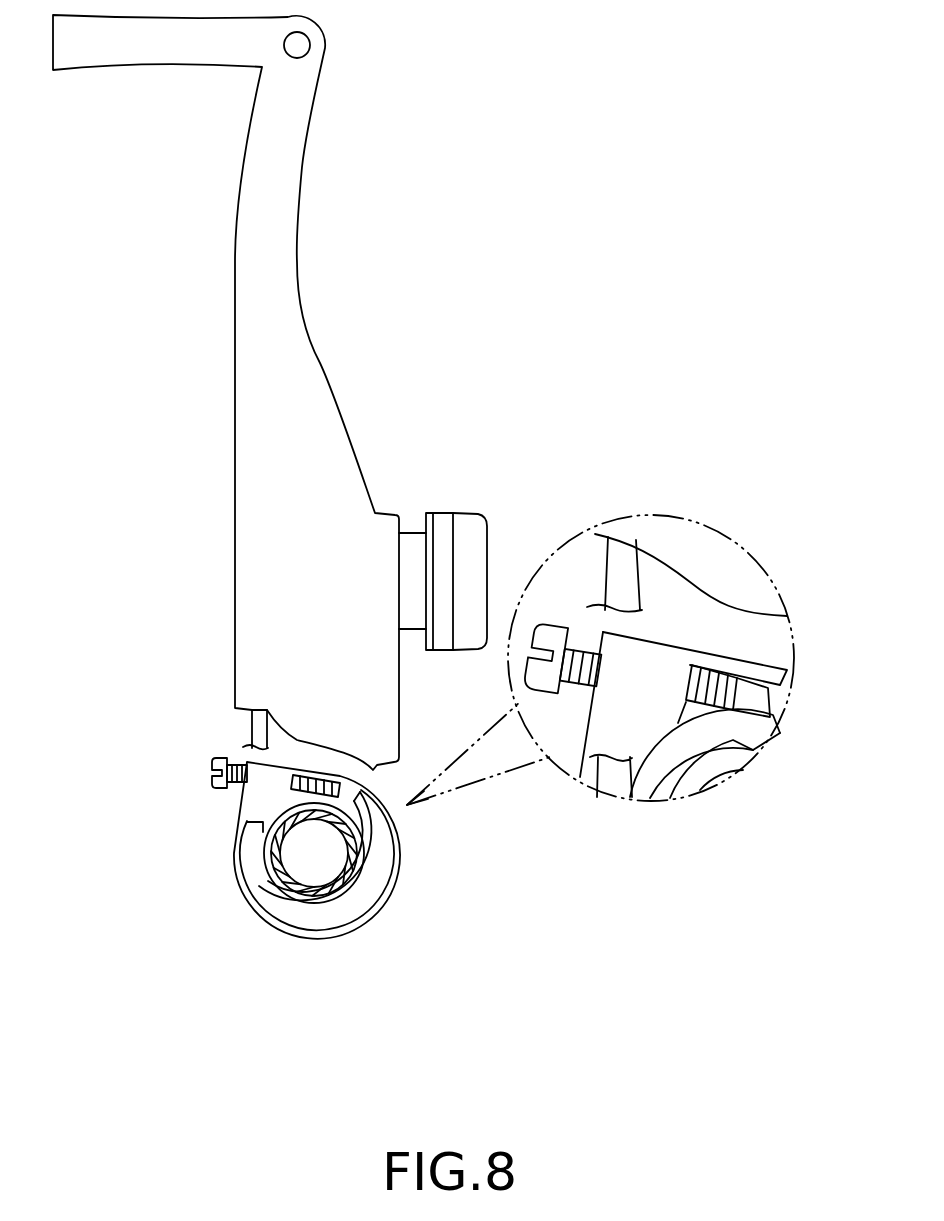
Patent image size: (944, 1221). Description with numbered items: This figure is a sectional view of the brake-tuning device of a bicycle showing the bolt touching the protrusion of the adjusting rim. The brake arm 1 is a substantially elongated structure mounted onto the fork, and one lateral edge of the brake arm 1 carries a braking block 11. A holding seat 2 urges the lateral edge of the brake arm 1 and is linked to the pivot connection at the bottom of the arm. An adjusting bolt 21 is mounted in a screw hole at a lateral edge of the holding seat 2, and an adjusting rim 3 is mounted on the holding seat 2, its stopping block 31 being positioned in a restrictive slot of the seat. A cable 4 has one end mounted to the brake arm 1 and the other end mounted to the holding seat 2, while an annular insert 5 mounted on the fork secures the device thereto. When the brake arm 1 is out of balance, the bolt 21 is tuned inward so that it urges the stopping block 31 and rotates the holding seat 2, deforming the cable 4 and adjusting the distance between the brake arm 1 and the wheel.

The brake arm 1 is at (318, 363).
The braking block 11 is at (474, 537).
The cable 4 is at (257, 728).
The holding seat 2 is at (240, 803).
The adjusting bolt 21 is at (212, 783).
The stopping block 31 is at (333, 793).
The adjusting rim 3 is at (365, 833).
The annular insert 5 is at (323, 890).